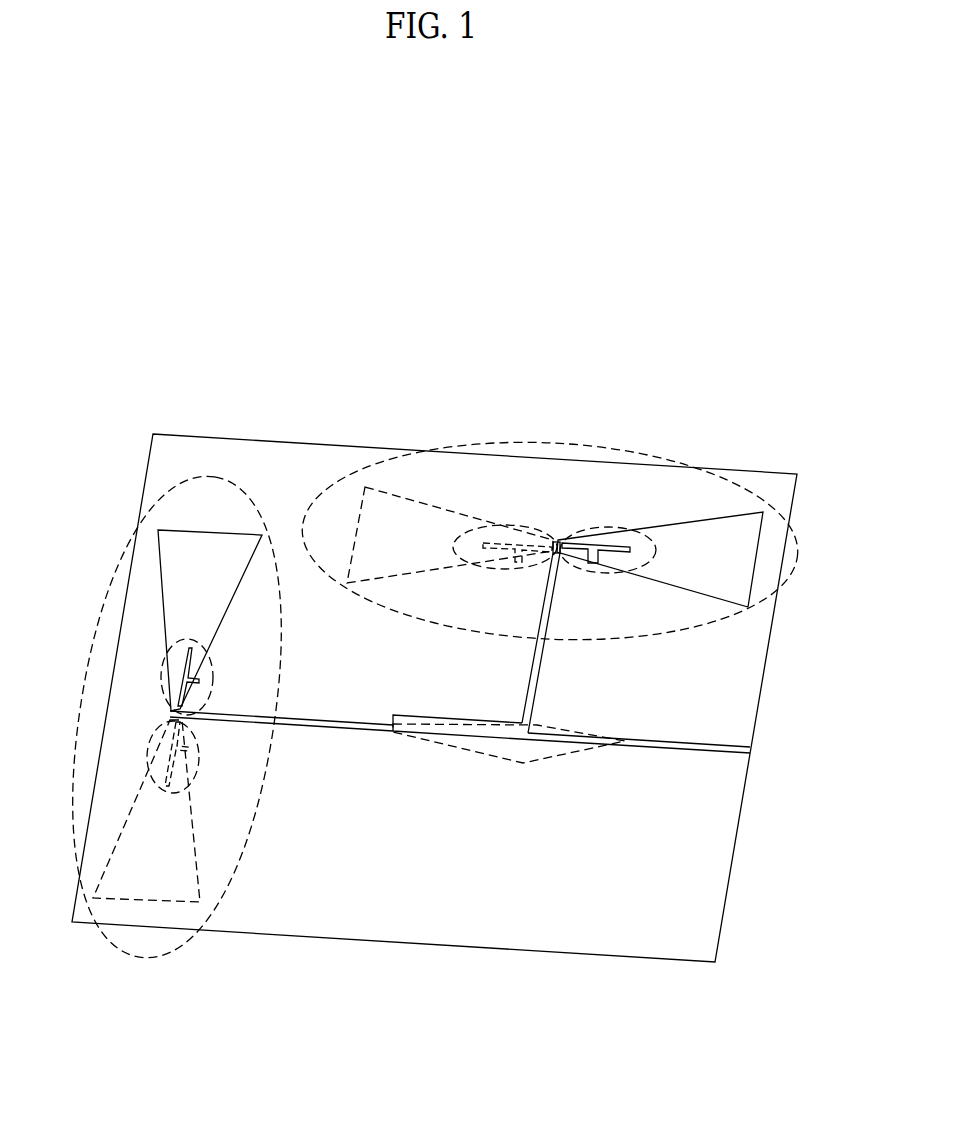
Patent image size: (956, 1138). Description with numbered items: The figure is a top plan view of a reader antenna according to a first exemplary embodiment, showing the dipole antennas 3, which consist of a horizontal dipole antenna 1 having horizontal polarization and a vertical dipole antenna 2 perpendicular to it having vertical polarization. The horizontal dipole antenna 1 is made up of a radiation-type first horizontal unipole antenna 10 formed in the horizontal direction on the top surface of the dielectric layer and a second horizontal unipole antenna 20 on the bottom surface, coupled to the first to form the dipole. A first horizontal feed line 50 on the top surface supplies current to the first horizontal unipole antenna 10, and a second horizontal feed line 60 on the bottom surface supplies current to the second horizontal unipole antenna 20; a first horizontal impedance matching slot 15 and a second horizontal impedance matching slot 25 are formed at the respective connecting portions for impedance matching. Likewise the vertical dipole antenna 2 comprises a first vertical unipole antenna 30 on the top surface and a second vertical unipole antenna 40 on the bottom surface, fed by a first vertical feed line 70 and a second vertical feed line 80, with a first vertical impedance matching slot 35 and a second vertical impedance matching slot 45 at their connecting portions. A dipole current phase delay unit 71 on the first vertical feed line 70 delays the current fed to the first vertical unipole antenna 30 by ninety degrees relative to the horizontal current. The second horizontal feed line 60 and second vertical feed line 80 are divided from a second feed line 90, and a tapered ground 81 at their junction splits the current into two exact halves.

The horizontal dipole antenna 1 is at (373, 468).
The vertical dipole antenna 2 is at (220, 478).
The dipole antennas 3 is at (438, 357).
The first horizontal unipole antenna 10 is at (705, 532).
The first horizontal impedance matching slot 15 is at (597, 528).
The second horizontal unipole antenna 20 is at (399, 505).
The second horizontal impedance matching slot 25 is at (518, 525).
The first vertical unipole antenna 30 is at (232, 548).
The first vertical impedance matching slot 35 is at (192, 640).
The second vertical unipole antenna 40 is at (167, 890).
The second vertical impedance matching slot 45 is at (200, 757).
The first horizontal feed line 50 is at (524, 783).
The second horizontal feed line 60 is at (540, 678).
The first vertical feed line 70 is at (317, 722).
The dipole current phase delay unit 71 is at (450, 730).
The second vertical feed line 80 is at (460, 786).
The tapered ground 81 is at (503, 753).
The second feed line 90 is at (657, 745).